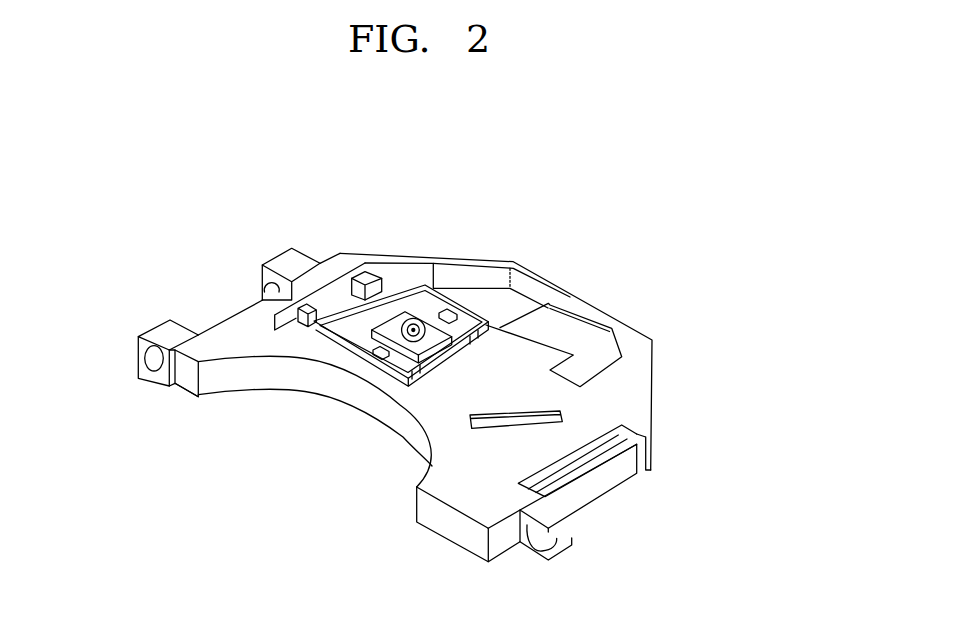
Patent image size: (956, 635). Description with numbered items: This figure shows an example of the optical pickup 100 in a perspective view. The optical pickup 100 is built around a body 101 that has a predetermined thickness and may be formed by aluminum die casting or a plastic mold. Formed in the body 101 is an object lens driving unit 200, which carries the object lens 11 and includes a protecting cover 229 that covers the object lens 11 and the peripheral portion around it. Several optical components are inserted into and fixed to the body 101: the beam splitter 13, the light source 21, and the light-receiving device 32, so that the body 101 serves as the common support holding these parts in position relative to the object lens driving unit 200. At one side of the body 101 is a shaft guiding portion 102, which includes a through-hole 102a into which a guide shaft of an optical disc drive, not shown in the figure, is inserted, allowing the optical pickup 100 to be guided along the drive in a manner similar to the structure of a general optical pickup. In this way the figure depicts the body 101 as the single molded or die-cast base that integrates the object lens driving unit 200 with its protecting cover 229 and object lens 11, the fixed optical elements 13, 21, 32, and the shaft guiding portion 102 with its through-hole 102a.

The optical pickup 100 is at (411, 379).
The body 101 is at (235, 333).
The shaft guiding portion 102 is at (158, 336).
The through-hole 102a is at (156, 361).
The object lens driving unit 200 is at (393, 293).
The object lens 11 is at (413, 326).
The protecting cover 229 is at (432, 298).
The beam splitter 13 is at (518, 424).
The light source 21 is at (583, 334).
The light-receiving device 32 is at (601, 483).